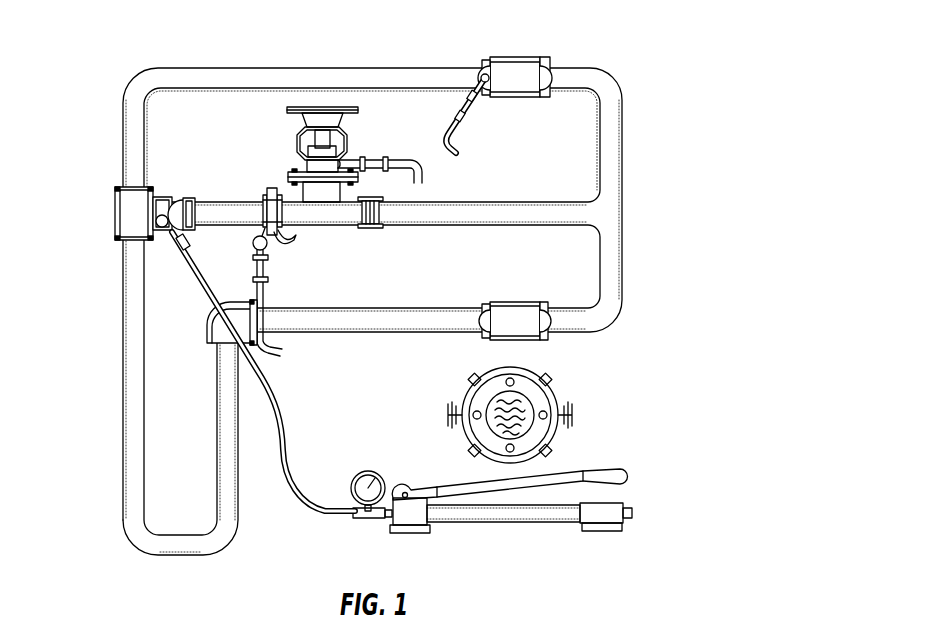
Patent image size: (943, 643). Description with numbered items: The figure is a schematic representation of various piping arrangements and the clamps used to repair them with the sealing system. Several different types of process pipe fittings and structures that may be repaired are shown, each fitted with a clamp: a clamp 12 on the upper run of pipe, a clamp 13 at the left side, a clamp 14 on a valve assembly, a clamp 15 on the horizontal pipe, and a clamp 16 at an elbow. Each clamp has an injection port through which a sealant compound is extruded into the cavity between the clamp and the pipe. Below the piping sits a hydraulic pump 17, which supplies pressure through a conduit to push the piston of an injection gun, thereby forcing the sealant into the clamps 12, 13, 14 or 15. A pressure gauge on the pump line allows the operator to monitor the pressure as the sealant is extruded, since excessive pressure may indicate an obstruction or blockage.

The clamp 12 is at (512, 57).
The clamp 13 is at (114, 203).
The clamp 14 is at (352, 158).
The clamp 15 is at (262, 200).
The clamp 16 is at (212, 313).
The hydraulic pump 17 is at (502, 523).